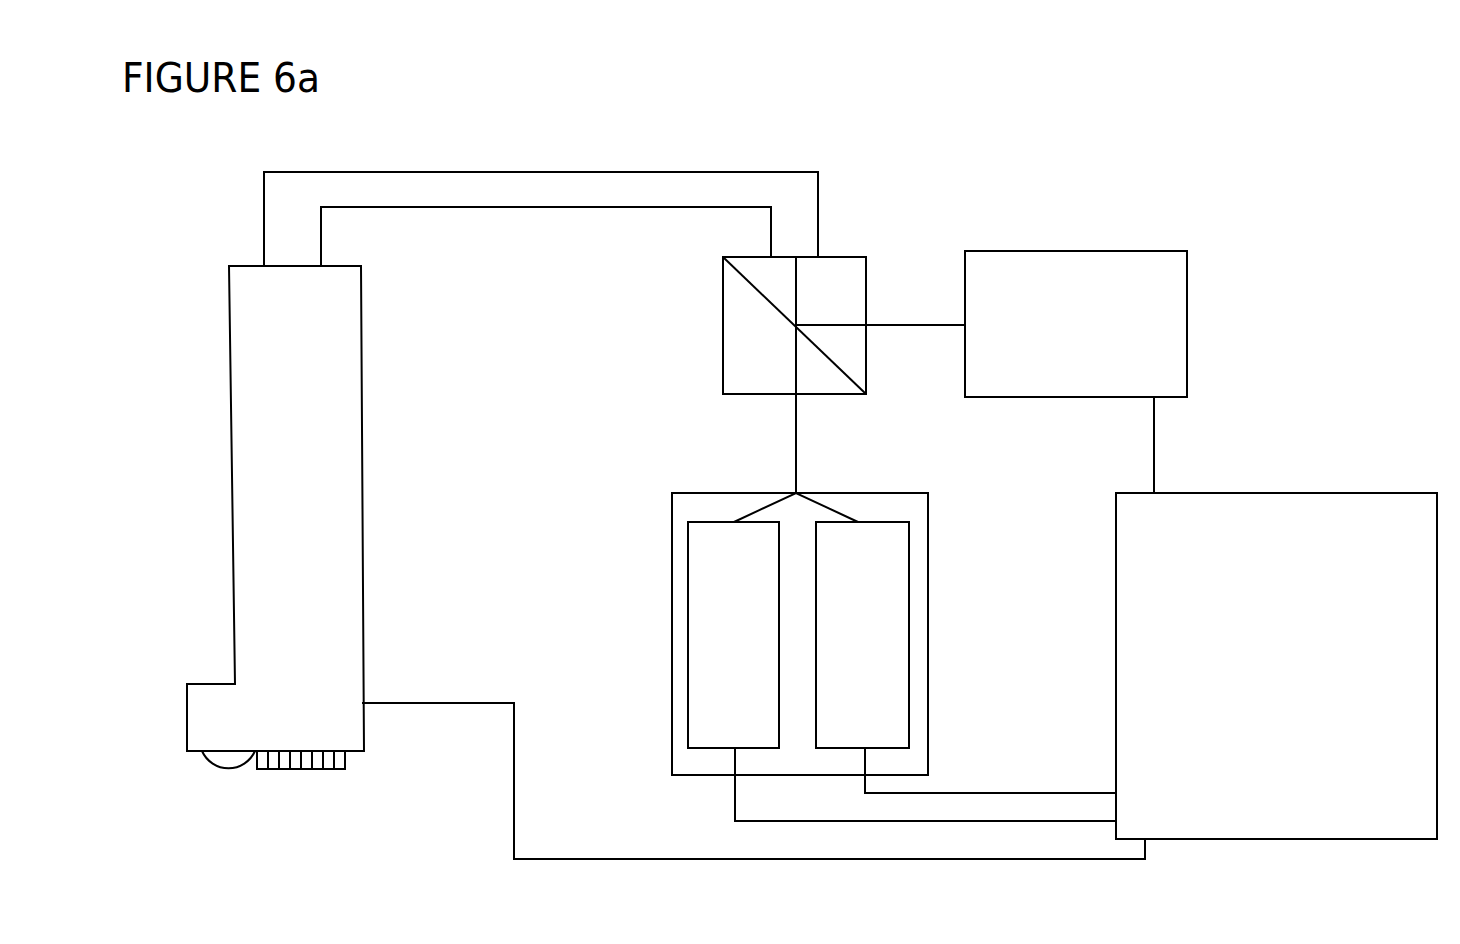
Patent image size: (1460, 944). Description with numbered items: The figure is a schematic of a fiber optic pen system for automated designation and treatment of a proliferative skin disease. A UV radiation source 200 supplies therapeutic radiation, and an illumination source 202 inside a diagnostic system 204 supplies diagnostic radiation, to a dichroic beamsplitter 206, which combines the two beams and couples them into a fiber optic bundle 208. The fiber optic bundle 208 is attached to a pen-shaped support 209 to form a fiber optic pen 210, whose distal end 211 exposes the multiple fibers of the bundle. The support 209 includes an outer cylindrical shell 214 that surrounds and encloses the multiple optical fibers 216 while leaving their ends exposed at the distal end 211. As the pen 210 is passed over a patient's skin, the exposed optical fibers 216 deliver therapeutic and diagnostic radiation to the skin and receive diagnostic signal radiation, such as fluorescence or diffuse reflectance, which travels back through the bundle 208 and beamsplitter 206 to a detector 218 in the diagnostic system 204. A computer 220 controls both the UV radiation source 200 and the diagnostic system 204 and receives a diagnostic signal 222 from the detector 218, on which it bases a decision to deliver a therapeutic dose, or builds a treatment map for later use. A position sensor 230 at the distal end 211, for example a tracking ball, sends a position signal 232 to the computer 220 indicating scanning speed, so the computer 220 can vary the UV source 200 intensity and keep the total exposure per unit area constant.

The UV radiation source 200 is at (1188, 320).
The illumination source 202 is at (688, 652).
The diagnostic system 204 is at (928, 627).
The dichroic beamsplitter 206 is at (723, 339).
The fiber optic bundle 208 is at (743, 172).
The pen-shaped support 209 is at (372, 443).
The fiber optic pen 210 is at (210, 566).
The distal end 211 is at (367, 751).
The outer cylindrical shell 214 is at (362, 588).
The optical fibers 216 is at (308, 771).
The detector 218 is at (909, 566).
The computer 220 is at (1300, 841).
The diagnostic signal 222 is at (998, 793).
The position sensor 230 is at (207, 770).
The position signal 232 is at (467, 703).